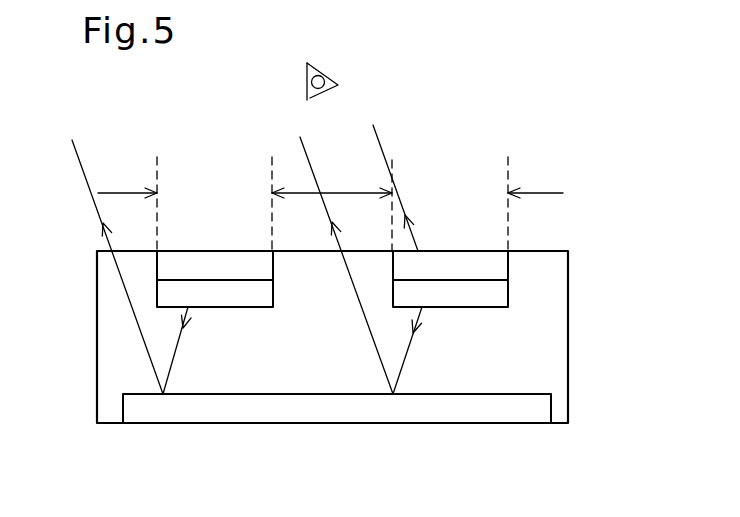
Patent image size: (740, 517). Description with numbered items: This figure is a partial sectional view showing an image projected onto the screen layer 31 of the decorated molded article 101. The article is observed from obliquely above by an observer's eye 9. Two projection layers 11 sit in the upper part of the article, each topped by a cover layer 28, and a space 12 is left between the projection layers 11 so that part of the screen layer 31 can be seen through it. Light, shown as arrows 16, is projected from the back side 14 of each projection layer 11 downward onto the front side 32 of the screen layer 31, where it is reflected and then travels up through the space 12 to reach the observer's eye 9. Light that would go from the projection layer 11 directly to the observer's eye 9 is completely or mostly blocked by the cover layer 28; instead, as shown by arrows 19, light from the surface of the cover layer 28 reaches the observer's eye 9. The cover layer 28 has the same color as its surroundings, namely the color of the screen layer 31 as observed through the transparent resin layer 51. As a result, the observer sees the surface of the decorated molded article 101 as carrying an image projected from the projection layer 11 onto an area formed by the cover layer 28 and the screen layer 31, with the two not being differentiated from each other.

The decorated molded article 101 is at (373, 240).
The transparent resin layer 51 is at (373, 337).
The front side of the screen layer 32 is at (610, 417).
The screen layer 31 is at (488, 447).
The cover layer 28 is at (200, 265).
The projection layer 11 is at (167, 295).
The back side of the projection layer 14 is at (172, 307).
The arrows 16 is at (142, 343).
The arrows 19 is at (378, 128).
The space 12 is at (119, 193).
The observer's eye 9 is at (306, 80).